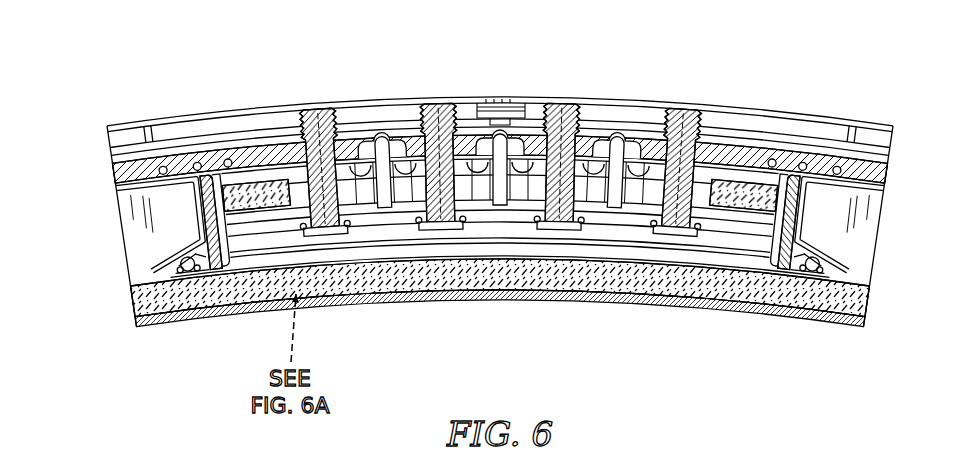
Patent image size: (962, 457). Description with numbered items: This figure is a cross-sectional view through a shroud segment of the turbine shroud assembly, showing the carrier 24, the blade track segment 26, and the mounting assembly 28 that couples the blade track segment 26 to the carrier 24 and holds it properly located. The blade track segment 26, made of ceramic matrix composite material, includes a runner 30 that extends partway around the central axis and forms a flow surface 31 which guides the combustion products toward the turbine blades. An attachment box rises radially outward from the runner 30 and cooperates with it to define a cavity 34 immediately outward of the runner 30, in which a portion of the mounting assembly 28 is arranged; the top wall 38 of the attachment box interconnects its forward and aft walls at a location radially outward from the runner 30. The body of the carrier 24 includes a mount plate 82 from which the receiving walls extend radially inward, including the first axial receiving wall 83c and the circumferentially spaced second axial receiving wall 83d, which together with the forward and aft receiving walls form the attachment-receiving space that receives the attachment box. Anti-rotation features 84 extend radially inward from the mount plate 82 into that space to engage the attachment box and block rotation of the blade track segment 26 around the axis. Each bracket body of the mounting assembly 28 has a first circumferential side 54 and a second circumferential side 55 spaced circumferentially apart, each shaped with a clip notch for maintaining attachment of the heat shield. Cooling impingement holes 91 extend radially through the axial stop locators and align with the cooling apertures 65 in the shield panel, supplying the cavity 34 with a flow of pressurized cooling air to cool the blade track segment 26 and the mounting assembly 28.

The carrier 24 is at (846, 104).
The blade track segment 26 is at (811, 324).
The mounting assembly 28 is at (580, 91).
The runner 30 is at (750, 316).
The flow surface 31 is at (675, 303).
The cavity 34 is at (226, 238).
The top wall 38 is at (772, 126).
The first circumferential side 54 is at (292, 191).
The second circumferential side 55 is at (343, 191).
The cooling apertures 65 is at (491, 251).
The mount plate 82 is at (222, 149).
The first axial receiving wall 83c is at (184, 210).
The second axial receiving wall 83d is at (814, 221).
The anti-rotation features 84 is at (407, 129).
The cooling impingement holes 91 is at (325, 112).